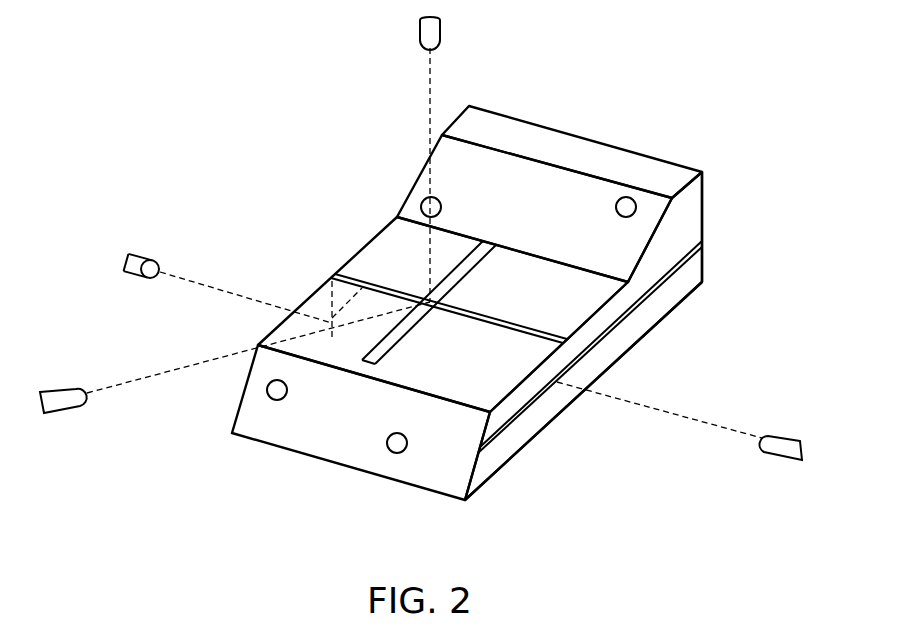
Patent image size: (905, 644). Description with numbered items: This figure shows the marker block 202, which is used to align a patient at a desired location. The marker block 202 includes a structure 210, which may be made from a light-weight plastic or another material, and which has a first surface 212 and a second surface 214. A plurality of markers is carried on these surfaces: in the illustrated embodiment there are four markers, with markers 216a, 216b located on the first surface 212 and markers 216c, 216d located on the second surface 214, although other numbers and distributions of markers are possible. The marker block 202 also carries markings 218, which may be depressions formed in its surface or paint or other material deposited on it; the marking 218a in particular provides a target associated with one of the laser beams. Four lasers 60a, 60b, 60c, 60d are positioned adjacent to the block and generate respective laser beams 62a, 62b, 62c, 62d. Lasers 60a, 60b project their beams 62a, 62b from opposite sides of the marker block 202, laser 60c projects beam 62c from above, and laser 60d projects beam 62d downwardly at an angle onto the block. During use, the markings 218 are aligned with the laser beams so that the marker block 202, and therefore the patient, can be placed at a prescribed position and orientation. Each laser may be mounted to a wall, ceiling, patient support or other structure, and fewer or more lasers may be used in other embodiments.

The marker block 202 is at (468, 293).
The structure 210 is at (657, 323).
The first surface 212 is at (292, 442).
The second surface 214 is at (563, 183).
The marker 216a is at (266, 392).
The marker 216b is at (395, 452).
The marker 216c is at (426, 200).
The marker 216d is at (634, 209).
The markings 218 is at (541, 408).
The marking 218a is at (330, 317).
The laser 60a is at (122, 273).
The laser 60b is at (770, 453).
The laser 60c is at (440, 30).
The laser 60d is at (62, 411).
The laser beam 62a is at (193, 280).
The laser beam 62b is at (733, 428).
The laser beam 62c is at (432, 68).
The laser beam 62d is at (190, 368).